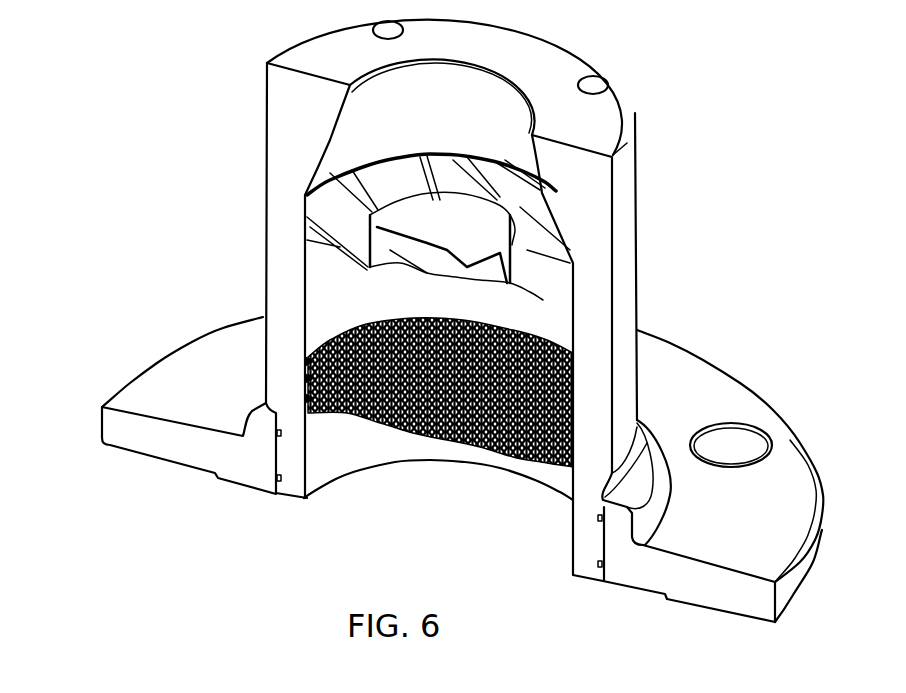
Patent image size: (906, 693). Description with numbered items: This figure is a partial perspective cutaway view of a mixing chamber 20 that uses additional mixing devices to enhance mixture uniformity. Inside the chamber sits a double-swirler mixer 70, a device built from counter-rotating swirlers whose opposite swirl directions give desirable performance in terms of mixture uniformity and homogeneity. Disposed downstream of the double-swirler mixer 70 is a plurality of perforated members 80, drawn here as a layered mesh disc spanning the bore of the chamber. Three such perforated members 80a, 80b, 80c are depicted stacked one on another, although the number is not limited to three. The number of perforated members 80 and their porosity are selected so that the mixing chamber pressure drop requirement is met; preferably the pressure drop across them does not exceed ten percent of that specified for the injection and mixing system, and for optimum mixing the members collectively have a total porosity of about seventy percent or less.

The mixing chamber 20 is at (675, 175).
The double-swirler mixer 70 is at (533, 265).
The perforated members 80 is at (357, 328).
The perforated member 80a is at (305, 360).
The perforated member 80b is at (305, 378).
The perforated member 80c is at (307, 400).